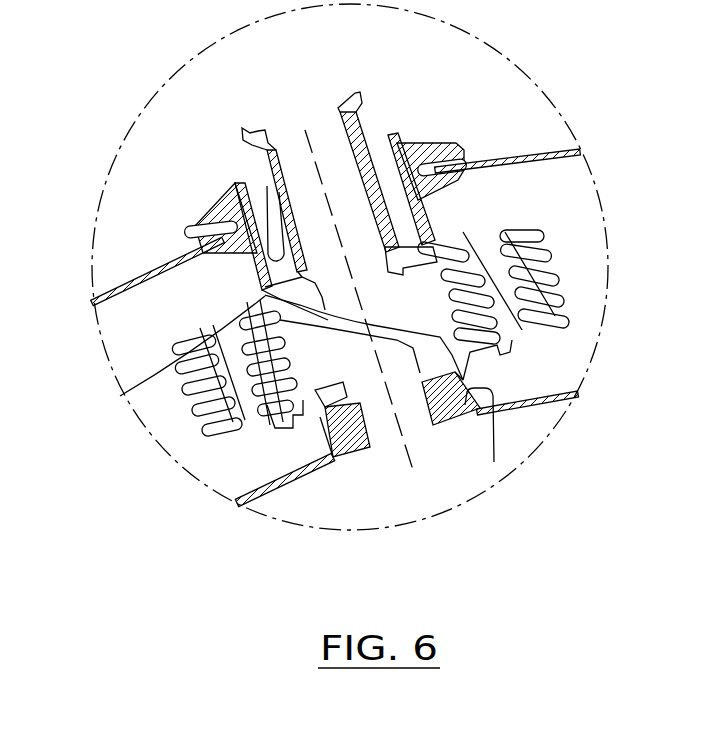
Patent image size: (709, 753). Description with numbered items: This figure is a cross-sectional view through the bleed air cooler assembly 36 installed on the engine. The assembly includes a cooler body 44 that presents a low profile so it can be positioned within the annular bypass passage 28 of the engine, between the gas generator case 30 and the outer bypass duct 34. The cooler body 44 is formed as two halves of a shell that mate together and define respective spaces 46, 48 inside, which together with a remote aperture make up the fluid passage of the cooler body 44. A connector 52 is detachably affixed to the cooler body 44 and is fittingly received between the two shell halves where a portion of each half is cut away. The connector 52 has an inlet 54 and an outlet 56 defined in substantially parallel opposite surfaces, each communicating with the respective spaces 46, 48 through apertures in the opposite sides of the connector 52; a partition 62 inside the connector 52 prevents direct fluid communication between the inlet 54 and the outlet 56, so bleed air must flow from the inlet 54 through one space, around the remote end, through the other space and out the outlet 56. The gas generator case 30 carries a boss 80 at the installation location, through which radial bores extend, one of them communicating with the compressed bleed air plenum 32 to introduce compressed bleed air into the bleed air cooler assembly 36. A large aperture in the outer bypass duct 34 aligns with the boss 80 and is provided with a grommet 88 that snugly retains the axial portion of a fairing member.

The annular bypass passage 28 is at (165, 329).
The gas generator case 30 is at (282, 483).
The compressed bleed air plenum 32 is at (436, 471).
The outer bypass duct 34 is at (175, 257).
The bleed air cooler assembly 36 is at (541, 250).
The cooler body 44 is at (517, 327).
The space 46 is at (303, 383).
The space 48 is at (417, 297).
The connector 52 is at (433, 281).
The inlet 54 is at (373, 397).
The outlet 56 is at (345, 322).
The partition 62 is at (322, 337).
The boss 80 is at (494, 462).
The grommet 88 is at (417, 140).